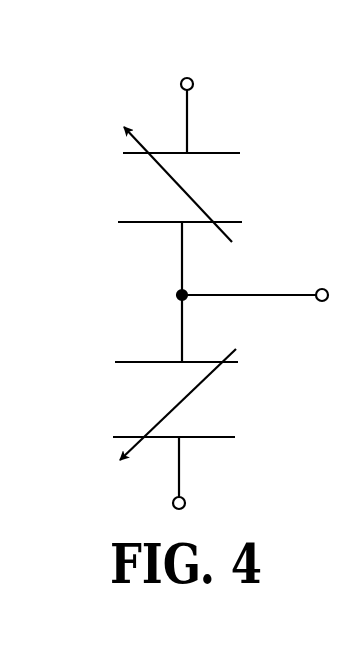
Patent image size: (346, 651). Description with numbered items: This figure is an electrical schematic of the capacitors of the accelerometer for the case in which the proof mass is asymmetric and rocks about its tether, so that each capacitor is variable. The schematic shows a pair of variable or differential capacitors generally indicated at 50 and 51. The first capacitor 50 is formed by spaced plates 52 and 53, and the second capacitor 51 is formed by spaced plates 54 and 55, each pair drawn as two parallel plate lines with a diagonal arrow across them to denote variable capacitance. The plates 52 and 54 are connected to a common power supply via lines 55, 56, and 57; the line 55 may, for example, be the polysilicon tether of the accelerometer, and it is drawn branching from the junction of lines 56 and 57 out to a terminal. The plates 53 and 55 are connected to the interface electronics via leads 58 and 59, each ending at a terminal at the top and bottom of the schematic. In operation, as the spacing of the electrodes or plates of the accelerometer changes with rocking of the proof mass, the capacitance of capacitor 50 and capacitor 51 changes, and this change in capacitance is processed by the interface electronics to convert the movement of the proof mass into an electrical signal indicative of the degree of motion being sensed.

The variable capacitor 50 is at (217, 185).
The variable capacitor 51 is at (240, 398).
The plate 52 is at (164, 224).
The plate 53 is at (212, 153).
The plate 54 is at (162, 361).
The plate / line 55 is at (287, 294).
The line 56 is at (184, 263).
The line 57 is at (184, 332).
The lead 58 is at (185, 110).
The lead 59 is at (178, 486).